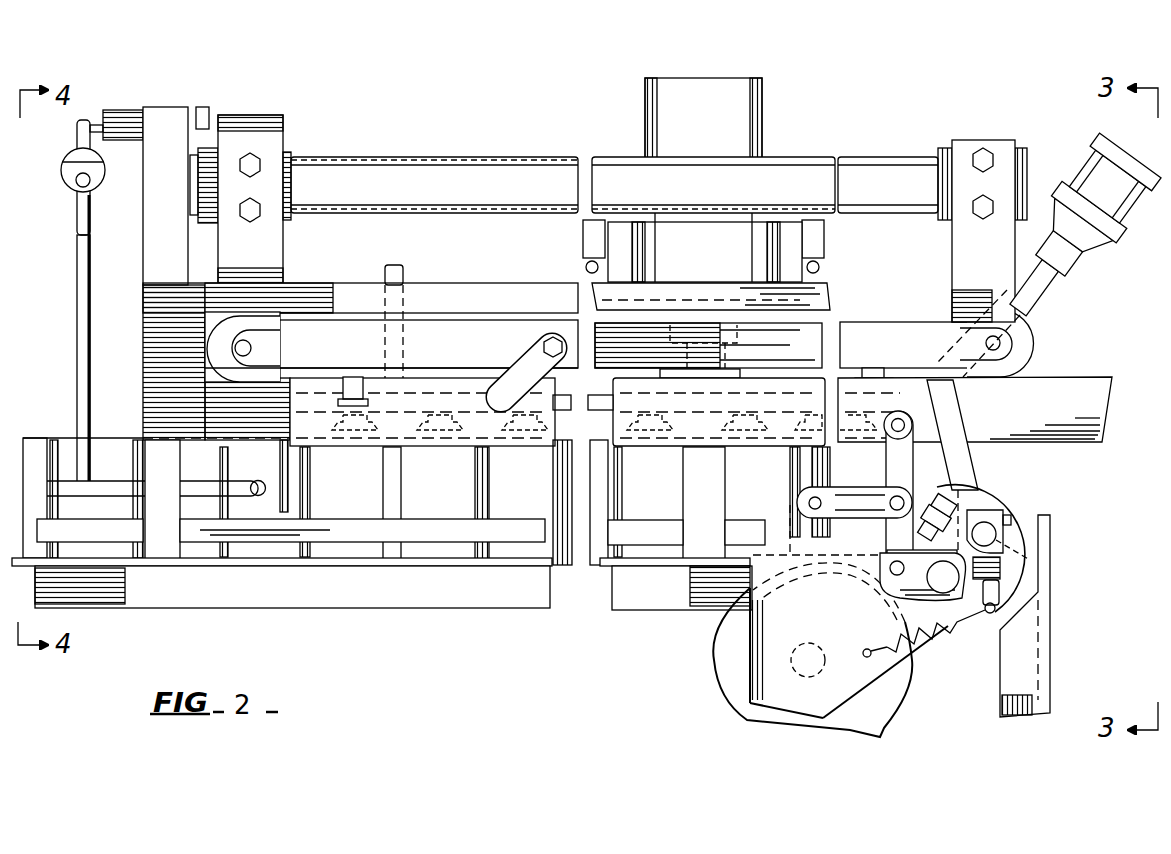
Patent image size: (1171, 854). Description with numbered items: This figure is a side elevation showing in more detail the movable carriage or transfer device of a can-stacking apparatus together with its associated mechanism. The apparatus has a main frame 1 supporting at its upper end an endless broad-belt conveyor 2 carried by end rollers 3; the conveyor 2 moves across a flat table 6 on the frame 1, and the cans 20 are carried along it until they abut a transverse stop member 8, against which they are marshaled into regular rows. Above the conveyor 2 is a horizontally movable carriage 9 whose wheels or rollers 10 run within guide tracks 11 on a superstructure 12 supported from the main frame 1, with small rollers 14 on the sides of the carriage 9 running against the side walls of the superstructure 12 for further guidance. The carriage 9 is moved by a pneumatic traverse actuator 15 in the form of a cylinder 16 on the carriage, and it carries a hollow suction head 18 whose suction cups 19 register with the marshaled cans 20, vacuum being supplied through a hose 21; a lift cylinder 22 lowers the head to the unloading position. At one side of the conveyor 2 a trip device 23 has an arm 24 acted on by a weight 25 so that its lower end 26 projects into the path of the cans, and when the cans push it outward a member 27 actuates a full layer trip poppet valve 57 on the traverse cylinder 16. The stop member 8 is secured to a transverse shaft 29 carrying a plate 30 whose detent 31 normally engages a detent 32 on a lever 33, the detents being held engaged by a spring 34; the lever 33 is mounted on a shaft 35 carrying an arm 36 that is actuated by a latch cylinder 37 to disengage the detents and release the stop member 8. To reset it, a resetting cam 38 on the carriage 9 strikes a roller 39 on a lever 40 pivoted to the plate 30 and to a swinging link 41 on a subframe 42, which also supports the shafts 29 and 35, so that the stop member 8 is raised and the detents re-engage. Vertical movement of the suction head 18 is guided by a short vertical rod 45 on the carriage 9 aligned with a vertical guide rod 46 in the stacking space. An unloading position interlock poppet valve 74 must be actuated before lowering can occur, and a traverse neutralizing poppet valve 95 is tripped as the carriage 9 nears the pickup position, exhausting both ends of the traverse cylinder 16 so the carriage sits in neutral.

The main frame 1 is at (352, 590).
The endless broad-belt conveyor 2 is at (596, 590).
The end roller 3 is at (722, 642).
The flat table 6 is at (512, 578).
The stop member 8 is at (1010, 548).
The carriage 9 is at (314, 340).
The wheels or rollers 10 is at (230, 333).
The guide tracks 11 is at (347, 320).
The superstructure 12 is at (158, 297).
The small rollers 14 is at (352, 406).
The traverse actuator 15 is at (370, 155).
The traverse cylinder 16 is at (612, 172).
The suction head 18 is at (440, 410).
The suction cups 19 is at (527, 432).
The cans 20 is at (490, 548).
The hose 21 is at (403, 270).
The lift cylinder 22 is at (735, 105).
The trip device 23 is at (72, 298).
The arm 24 is at (85, 222).
The weight 25 is at (78, 158).
The lower end of arm 26 is at (107, 520).
The member 27 is at (205, 118).
The transverse shaft 29 is at (940, 590).
The plate 30 is at (892, 581).
The detent 31 is at (985, 573).
The detent 32 is at (992, 586).
The lever 33 is at (998, 608).
The spring 34 is at (918, 655).
The shaft 35 is at (1000, 525).
The arm 36 is at (950, 460).
The latch cylinder 37 is at (1112, 240).
The resetting cam 38 is at (530, 372).
The roller 39 is at (913, 426).
The lever 40 is at (888, 527).
The swinging link 41 is at (862, 500).
The subframe 42 is at (776, 665).
The short vertical rod 45 is at (284, 512).
The vertical guide rod 46 is at (1040, 518).
The full layer trip poppet valve 57 is at (262, 128).
The unloading position press button interlock poppet valve 74 is at (590, 238).
The traverse neutralizing poppet valve 95 is at (827, 238).